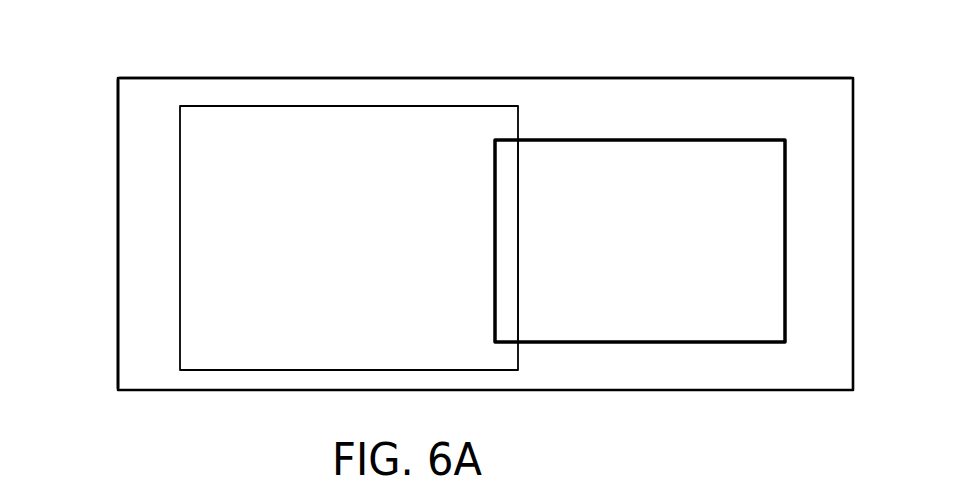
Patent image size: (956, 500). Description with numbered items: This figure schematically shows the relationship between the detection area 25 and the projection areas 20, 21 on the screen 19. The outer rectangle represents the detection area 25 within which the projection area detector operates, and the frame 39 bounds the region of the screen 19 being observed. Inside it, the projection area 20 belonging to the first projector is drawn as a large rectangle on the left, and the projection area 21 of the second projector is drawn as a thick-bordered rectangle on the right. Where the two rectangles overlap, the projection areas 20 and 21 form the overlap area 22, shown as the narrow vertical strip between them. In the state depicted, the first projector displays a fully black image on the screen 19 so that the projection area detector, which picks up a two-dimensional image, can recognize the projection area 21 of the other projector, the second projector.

The screen 19 is at (170, 52).
The projection area 20 is at (237, 197).
The projection area 21 is at (665, 202).
The overlap area 22 is at (503, 198).
The detection area 25 is at (118, 331).
The frame 39 is at (485, 40).